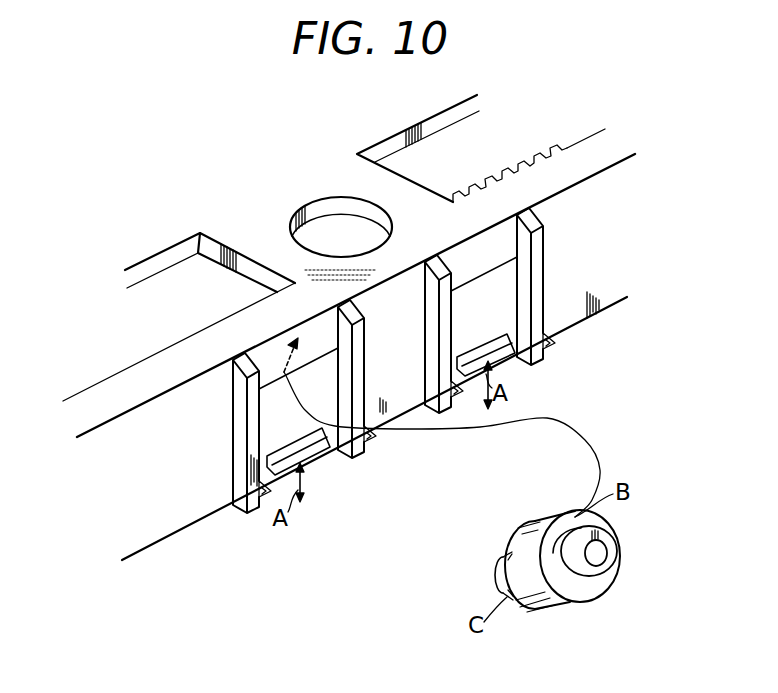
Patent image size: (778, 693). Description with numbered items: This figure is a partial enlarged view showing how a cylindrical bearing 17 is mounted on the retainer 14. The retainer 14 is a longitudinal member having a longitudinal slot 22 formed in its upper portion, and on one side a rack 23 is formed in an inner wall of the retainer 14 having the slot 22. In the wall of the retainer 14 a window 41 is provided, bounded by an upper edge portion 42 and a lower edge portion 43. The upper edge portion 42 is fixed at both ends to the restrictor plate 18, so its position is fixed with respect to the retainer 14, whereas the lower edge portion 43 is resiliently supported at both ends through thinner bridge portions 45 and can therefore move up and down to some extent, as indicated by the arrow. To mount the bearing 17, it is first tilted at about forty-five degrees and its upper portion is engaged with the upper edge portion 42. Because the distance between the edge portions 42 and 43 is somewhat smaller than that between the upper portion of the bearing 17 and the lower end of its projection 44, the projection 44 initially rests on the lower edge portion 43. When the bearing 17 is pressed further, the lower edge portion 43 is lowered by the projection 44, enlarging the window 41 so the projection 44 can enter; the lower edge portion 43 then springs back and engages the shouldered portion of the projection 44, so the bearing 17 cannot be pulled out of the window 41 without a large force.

The retainer 14 is at (255, 232).
The longitudinal slot 22 is at (395, 142).
The rack 23 is at (533, 154).
The restrictor plate 18 is at (614, 301).
The window 41 is at (265, 418).
The upper edge portion 42 is at (326, 340).
The lower edge portion 43 is at (317, 458).
The bridge portions 45 is at (267, 497).
The projection 44 is at (497, 577).
The bearing 17 is at (553, 582).